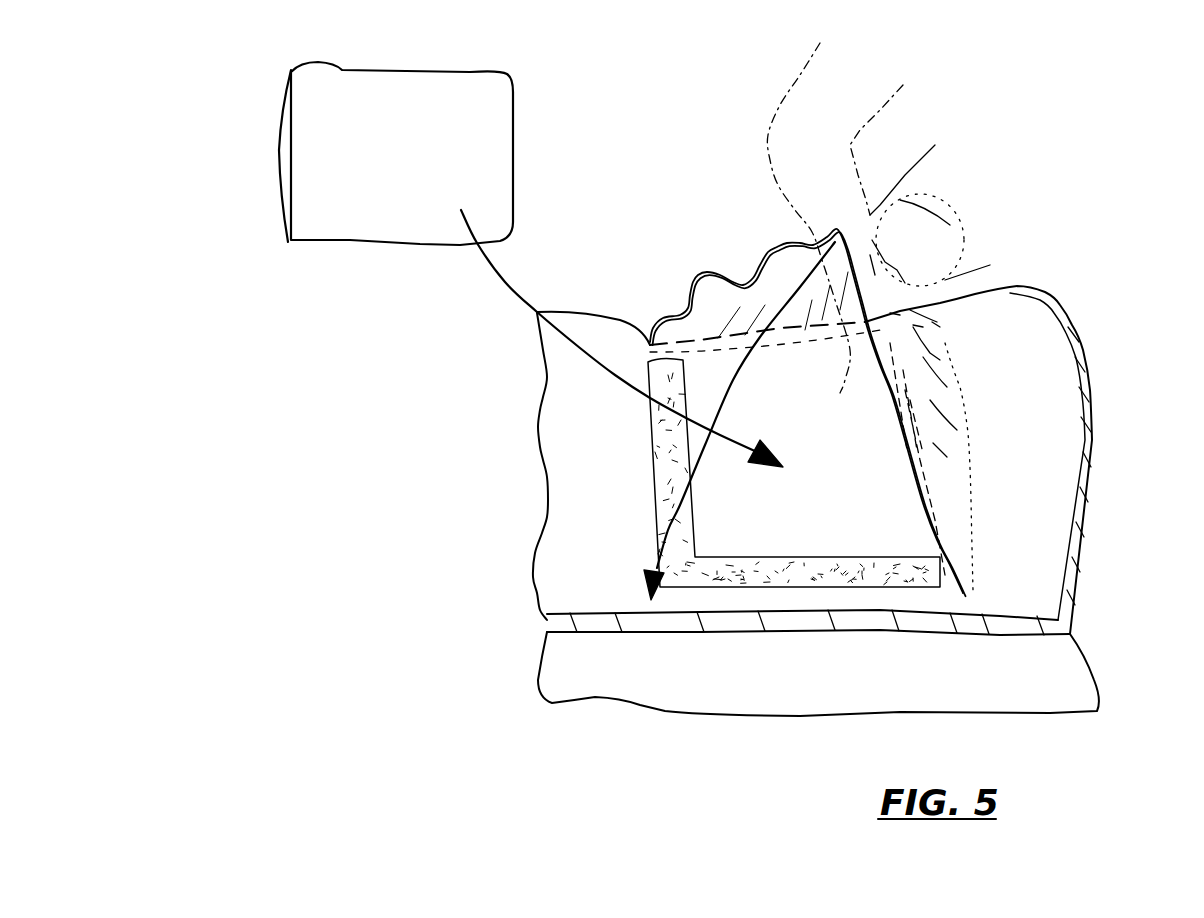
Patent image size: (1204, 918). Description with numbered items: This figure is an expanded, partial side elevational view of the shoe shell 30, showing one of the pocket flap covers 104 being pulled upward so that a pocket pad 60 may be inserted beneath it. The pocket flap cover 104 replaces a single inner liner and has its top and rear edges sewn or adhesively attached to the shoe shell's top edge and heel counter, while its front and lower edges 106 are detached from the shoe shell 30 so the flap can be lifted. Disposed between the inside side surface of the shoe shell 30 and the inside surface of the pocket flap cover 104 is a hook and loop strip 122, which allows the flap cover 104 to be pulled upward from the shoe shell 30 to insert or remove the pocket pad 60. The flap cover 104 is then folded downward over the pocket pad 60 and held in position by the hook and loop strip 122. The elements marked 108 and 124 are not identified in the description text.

The pocket pad 60 is at (313, 128).
The shoe shell 30 is at (1072, 315).
The pocket flap cover 104 is at (755, 263).
The front and lower edges 106 is at (690, 300).
The membrane wall 108 is at (905, 455).
The hook and loop strip 122 is at (668, 467).
The bur outline 124 is at (878, 226).